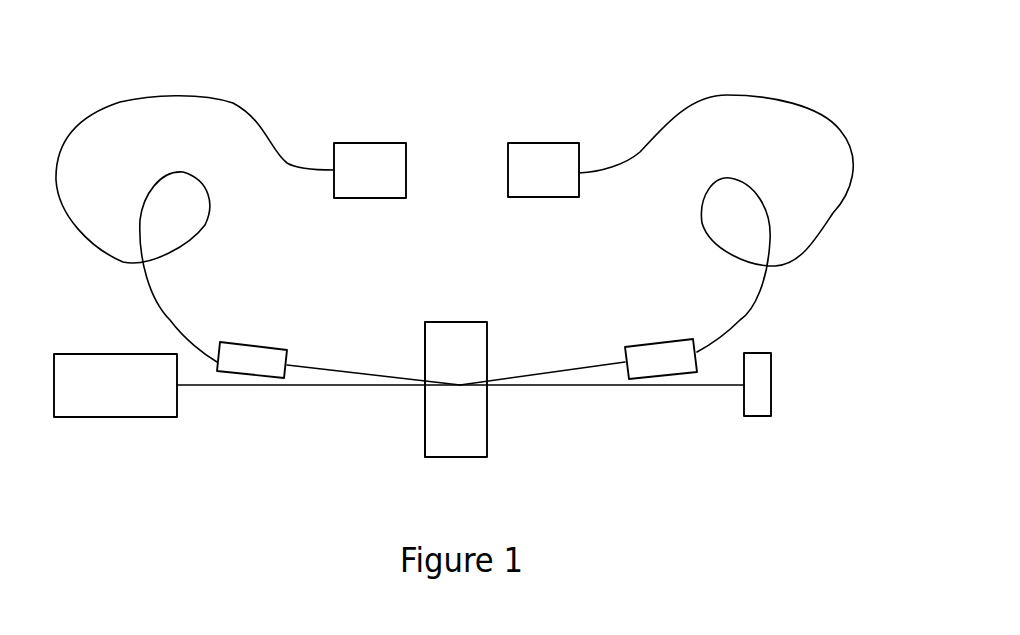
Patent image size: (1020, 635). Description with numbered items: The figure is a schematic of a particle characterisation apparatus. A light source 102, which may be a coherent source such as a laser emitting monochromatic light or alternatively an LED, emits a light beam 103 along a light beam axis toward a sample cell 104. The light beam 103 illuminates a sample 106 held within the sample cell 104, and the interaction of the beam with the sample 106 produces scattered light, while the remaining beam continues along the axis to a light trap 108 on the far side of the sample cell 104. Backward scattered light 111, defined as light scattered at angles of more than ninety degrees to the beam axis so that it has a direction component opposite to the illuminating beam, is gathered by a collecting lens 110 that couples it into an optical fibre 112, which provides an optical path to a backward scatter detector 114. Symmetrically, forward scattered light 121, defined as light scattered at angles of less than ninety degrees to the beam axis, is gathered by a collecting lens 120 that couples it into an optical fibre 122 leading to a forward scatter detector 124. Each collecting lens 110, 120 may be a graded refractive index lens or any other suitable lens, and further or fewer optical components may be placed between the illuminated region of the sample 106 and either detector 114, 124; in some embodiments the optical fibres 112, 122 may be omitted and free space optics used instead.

The light source 102 is at (115, 385).
The light beam 103 is at (298, 387).
The sample cell 104 is at (487, 435).
The sample 106 is at (445, 437).
The light trap 108 is at (770, 417).
The collecting lens 110 is at (263, 347).
The backward scattered light 111 is at (340, 370).
The optical fibre 112 is at (170, 313).
The backward scatter detector 114 is at (375, 142).
The collecting lens 120 is at (627, 344).
The forward scattered light 121 is at (562, 370).
The optical fibre 122 is at (743, 315).
The forward scatter detector 124 is at (558, 143).